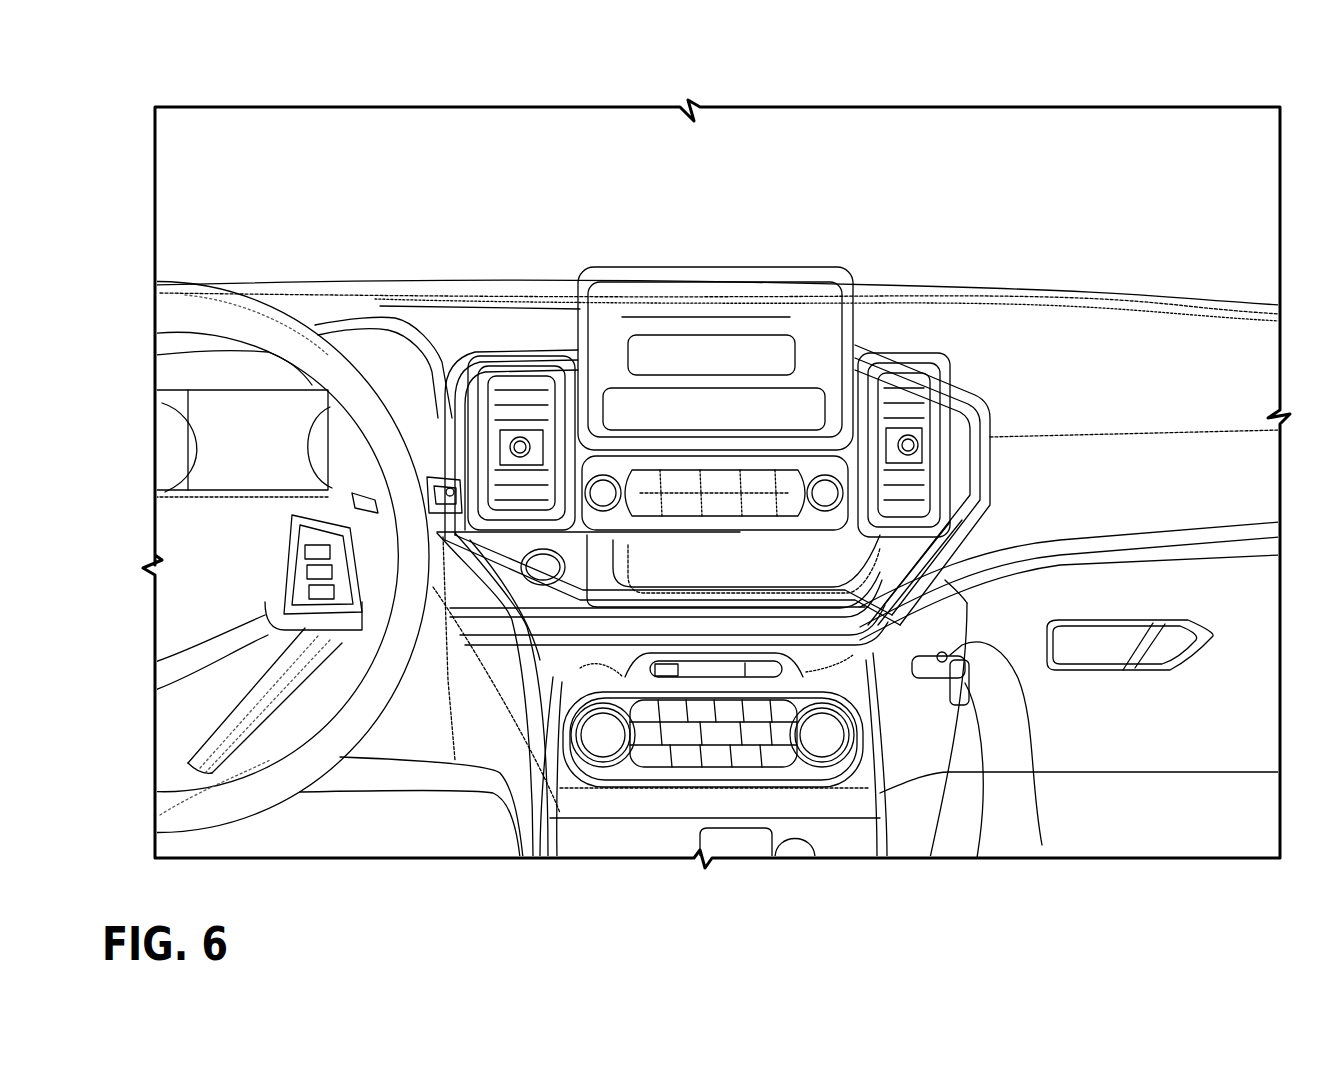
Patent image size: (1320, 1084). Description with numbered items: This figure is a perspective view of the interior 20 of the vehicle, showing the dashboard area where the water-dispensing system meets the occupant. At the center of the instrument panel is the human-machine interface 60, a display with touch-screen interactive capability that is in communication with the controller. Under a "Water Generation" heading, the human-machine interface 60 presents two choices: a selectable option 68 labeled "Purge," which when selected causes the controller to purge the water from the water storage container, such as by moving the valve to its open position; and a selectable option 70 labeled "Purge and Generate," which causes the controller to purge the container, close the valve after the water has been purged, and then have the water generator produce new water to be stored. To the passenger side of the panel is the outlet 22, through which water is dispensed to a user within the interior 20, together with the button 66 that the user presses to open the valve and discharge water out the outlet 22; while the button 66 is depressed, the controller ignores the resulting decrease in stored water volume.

The interior 20 is at (318, 169).
The human-machine interface 60 is at (670, 275).
The selectable option 68 is at (628, 348).
The selectable option 70 is at (606, 395).
The outlet 22 is at (962, 685).
The button 66 is at (1042, 845).